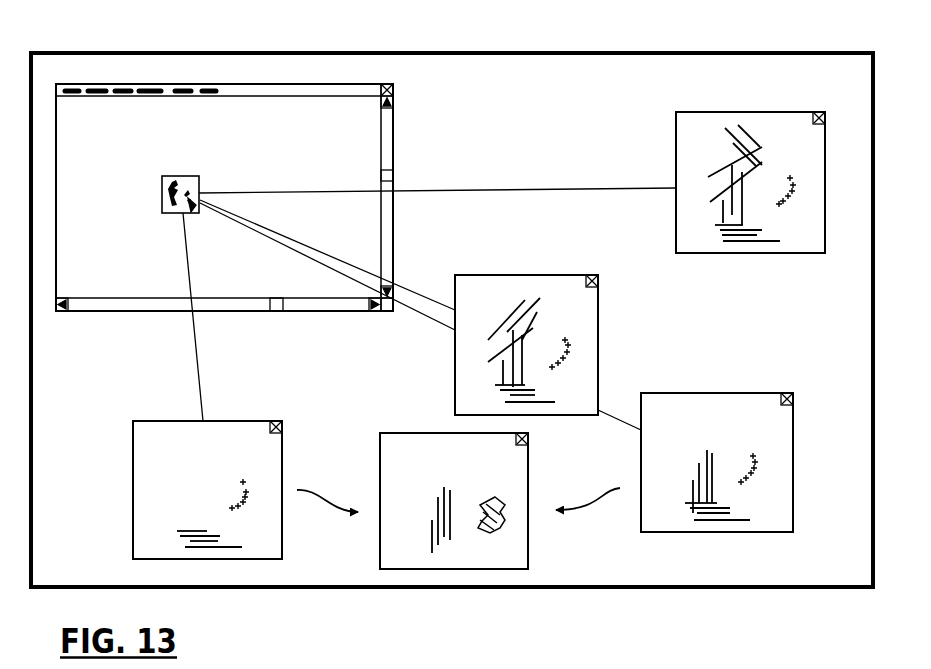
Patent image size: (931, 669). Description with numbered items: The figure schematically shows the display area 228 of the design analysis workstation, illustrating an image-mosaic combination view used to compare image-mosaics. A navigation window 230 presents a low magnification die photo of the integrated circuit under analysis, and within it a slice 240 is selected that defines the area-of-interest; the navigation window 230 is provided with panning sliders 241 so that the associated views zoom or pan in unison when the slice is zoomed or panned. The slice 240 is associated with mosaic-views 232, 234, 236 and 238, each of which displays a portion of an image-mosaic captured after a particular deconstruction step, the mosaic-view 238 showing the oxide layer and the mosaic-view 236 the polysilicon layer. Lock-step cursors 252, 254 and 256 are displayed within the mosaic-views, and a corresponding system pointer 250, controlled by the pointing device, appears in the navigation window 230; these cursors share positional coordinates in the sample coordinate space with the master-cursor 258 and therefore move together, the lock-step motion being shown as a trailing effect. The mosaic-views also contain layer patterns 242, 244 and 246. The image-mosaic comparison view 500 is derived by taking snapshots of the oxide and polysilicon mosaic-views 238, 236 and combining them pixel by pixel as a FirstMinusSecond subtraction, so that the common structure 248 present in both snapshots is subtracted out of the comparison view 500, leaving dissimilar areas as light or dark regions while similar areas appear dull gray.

The display area 228 is at (527, 80).
The navigation window 230 is at (93, 278).
The mosaic-view 232 is at (708, 125).
The mosaic-view 234 is at (467, 377).
The mosaic-view (polysilicon layer) 236 is at (747, 405).
The mosaic-view (oxide layer) 238 is at (270, 543).
The slice 240 is at (193, 177).
The panning sliders 241 is at (387, 176).
The Metal1 layer geometry 242 is at (706, 162).
The Metal2 layer geometry 244 is at (470, 267).
The Poly layer geometry 246 is at (683, 475).
The common structure 248 is at (178, 518).
The system pointer 250 is at (196, 214).
The lock-step cursor 252 is at (783, 222).
The lock-step cursor 254 is at (563, 378).
The lock-step cursor 256 is at (748, 490).
The master-cursor 258 is at (484, 498).
The image-mosaic comparison view 500 is at (505, 548).